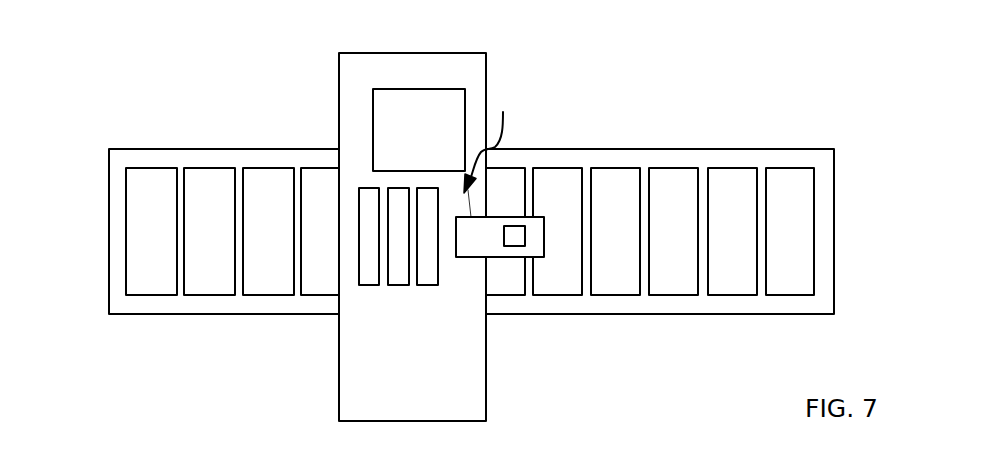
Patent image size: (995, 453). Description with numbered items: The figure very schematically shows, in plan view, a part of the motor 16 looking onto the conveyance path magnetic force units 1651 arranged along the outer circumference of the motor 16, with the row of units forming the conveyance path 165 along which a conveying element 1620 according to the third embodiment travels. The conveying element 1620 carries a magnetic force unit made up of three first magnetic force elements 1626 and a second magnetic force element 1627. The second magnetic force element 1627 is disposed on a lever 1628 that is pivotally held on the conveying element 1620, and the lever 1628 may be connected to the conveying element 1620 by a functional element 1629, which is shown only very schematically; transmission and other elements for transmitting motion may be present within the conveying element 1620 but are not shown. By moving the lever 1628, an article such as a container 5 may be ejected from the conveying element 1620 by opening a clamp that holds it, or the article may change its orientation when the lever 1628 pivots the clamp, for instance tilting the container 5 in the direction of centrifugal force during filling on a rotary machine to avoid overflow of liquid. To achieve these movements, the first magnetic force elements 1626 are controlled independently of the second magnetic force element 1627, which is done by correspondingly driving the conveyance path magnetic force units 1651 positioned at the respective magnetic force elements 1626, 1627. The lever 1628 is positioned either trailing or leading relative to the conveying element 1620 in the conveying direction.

The motor 16 is at (856, 72).
The solar panel 165 is at (135, 158).
The conveyance path magnetic force unit 1651 is at (138, 192).
The conveying element 1620 is at (362, 75).
The container 5 is at (440, 88).
The first magnetic force element 1626 is at (365, 280).
The second magnetic force element 1627 is at (517, 247).
The lever 1628 is at (541, 217).
The functional element 1629 is at (503, 152).